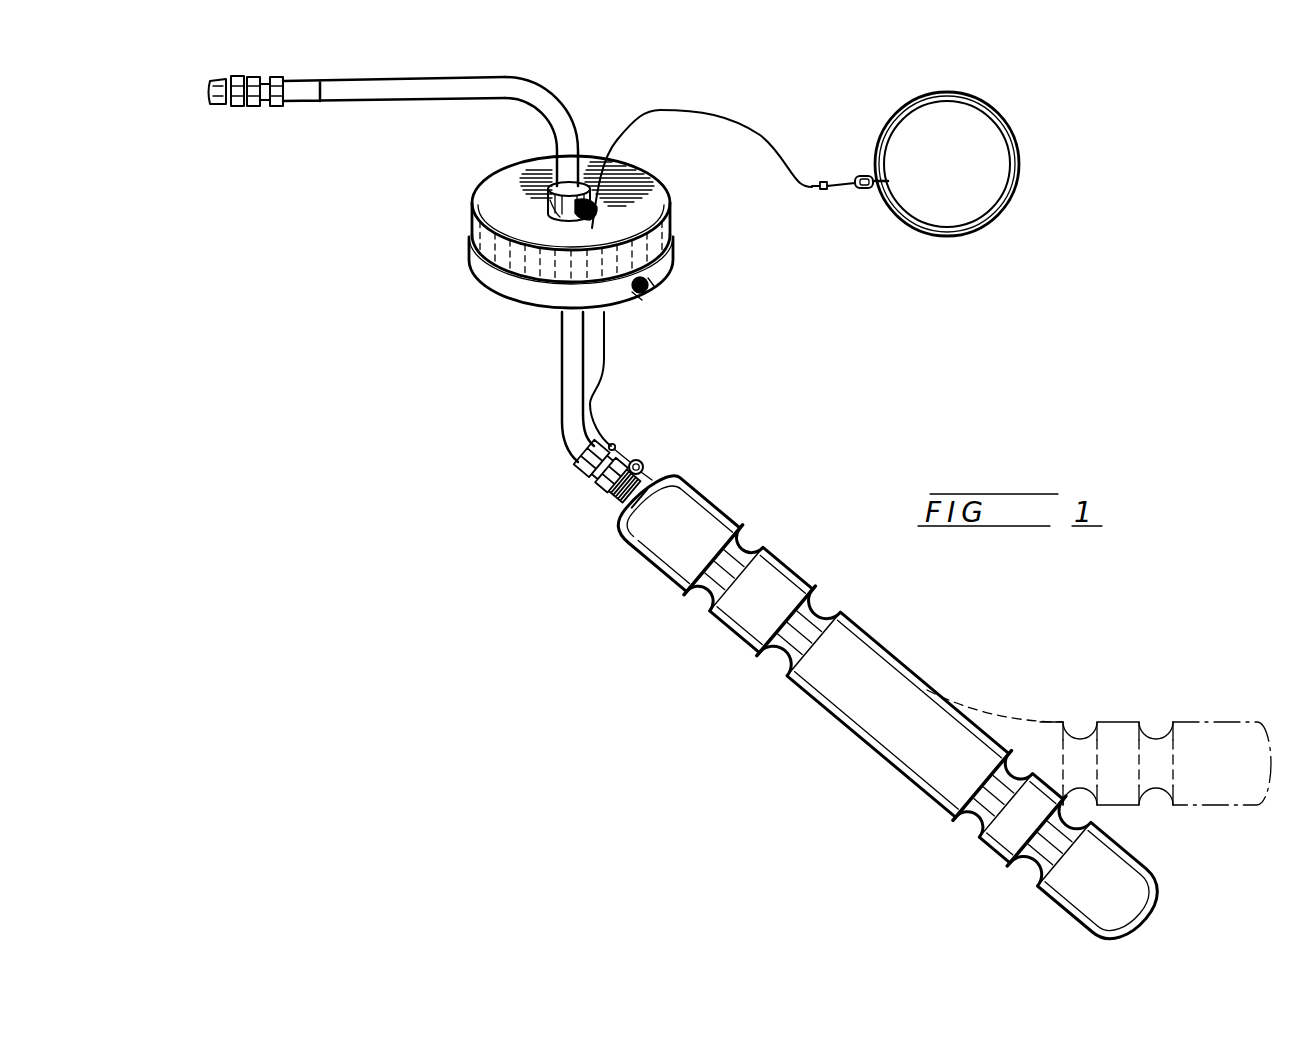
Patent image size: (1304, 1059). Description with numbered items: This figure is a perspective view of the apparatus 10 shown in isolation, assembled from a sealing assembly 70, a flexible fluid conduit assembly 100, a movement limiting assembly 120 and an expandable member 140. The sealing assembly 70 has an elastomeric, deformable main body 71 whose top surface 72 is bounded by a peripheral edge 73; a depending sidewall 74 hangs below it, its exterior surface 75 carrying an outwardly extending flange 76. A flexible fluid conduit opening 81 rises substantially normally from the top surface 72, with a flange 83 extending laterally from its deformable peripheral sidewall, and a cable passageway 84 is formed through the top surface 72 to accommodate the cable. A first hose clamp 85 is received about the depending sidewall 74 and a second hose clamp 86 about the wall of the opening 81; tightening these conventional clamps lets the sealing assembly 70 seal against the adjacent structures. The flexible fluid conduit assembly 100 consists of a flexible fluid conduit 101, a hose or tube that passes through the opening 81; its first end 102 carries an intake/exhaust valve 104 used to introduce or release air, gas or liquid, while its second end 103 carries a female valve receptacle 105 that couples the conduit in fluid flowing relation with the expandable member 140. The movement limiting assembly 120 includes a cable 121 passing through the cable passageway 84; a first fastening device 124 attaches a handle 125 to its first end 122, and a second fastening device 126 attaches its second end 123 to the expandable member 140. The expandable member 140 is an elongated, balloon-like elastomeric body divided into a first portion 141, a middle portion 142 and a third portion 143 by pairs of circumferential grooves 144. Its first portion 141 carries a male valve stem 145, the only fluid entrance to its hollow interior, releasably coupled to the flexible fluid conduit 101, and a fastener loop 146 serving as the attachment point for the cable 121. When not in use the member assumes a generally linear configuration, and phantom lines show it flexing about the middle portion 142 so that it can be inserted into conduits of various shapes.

The apparatus 10 is at (915, 598).
The sealing assembly 70 is at (736, 240).
The main body 71 is at (588, 253).
The top surface 72 is at (497, 190).
The peripheral edge 73 is at (665, 189).
The depending sidewall 74 is at (521, 286).
The exterior surface 75 is at (470, 228).
The outwardly extending flange 76 is at (477, 277).
The flexible fluid conduit opening 81 is at (590, 167).
The flange 83 is at (540, 163).
The cable passageway 84 is at (594, 227).
The first hose clamp 85 is at (650, 291).
The second hose clamp 86 is at (553, 206).
The flexible fluid conduit assembly 100 is at (528, 374).
The flexible fluid conduit 101 is at (557, 99).
The first end 102 is at (400, 98).
The second end 103 is at (562, 438).
The intake/exhaust valve 104 is at (218, 106).
The female valve receptacle 105 is at (597, 472).
The movement limiting assembly 120 is at (691, 69).
The cable 121 is at (605, 340).
The first end 122 is at (776, 150).
The second end 123 is at (600, 430).
The first fastening device 124 is at (832, 190).
The handle 125 is at (1005, 200).
The second fastening device 126 is at (643, 463).
The expandable member 140 is at (944, 743).
The first portion 141 is at (688, 530).
The middle portion 142 is at (840, 722).
The third portion 143 is at (1133, 898).
The circumferential grooves 144 is at (662, 477).
The male valve stem 145 is at (630, 502).
The fastener loop 146 is at (830, 594).